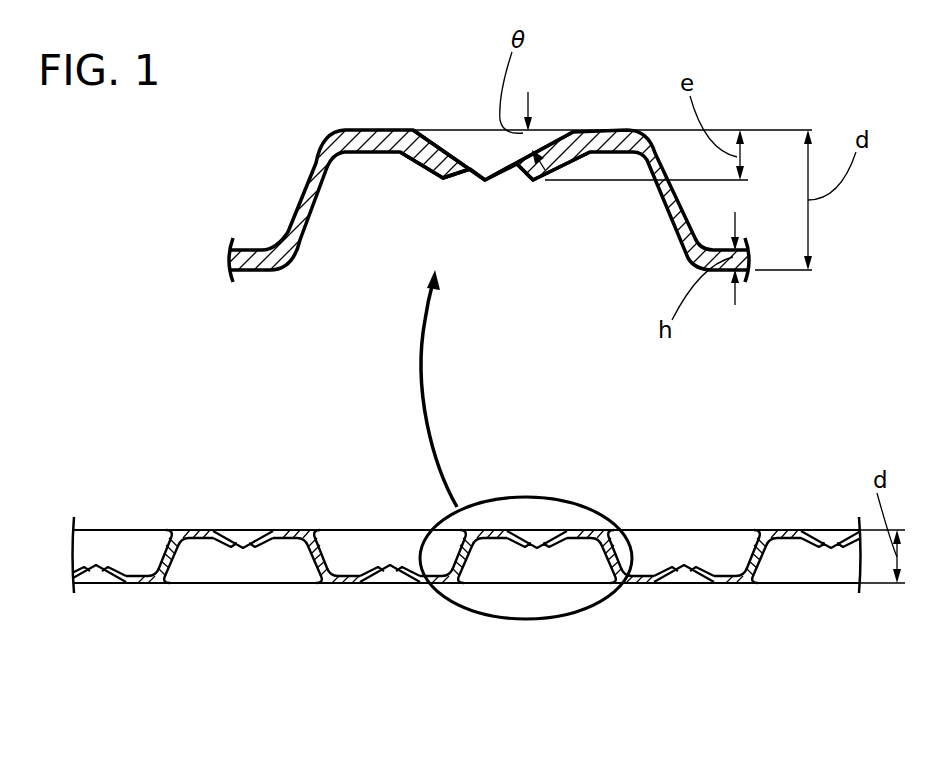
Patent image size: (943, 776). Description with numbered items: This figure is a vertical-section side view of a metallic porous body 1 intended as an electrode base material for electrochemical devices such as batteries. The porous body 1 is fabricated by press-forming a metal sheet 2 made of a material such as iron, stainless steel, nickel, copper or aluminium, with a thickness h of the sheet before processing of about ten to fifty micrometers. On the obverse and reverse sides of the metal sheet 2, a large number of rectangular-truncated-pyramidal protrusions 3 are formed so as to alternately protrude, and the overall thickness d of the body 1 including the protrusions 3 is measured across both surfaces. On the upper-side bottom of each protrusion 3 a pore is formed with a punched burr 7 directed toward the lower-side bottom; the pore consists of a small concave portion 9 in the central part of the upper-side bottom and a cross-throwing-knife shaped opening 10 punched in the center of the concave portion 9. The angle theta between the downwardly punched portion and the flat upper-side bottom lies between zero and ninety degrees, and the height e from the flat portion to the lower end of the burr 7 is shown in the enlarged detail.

The metallic porous body 1 is at (245, 503).
The metal sheet 2 is at (150, 584).
The protrusions 3 is at (290, 528).
The punched burr 7 is at (468, 168).
The small concave portion 9 is at (483, 143).
The cross-throwing-knife shaped opening 10 is at (487, 202).